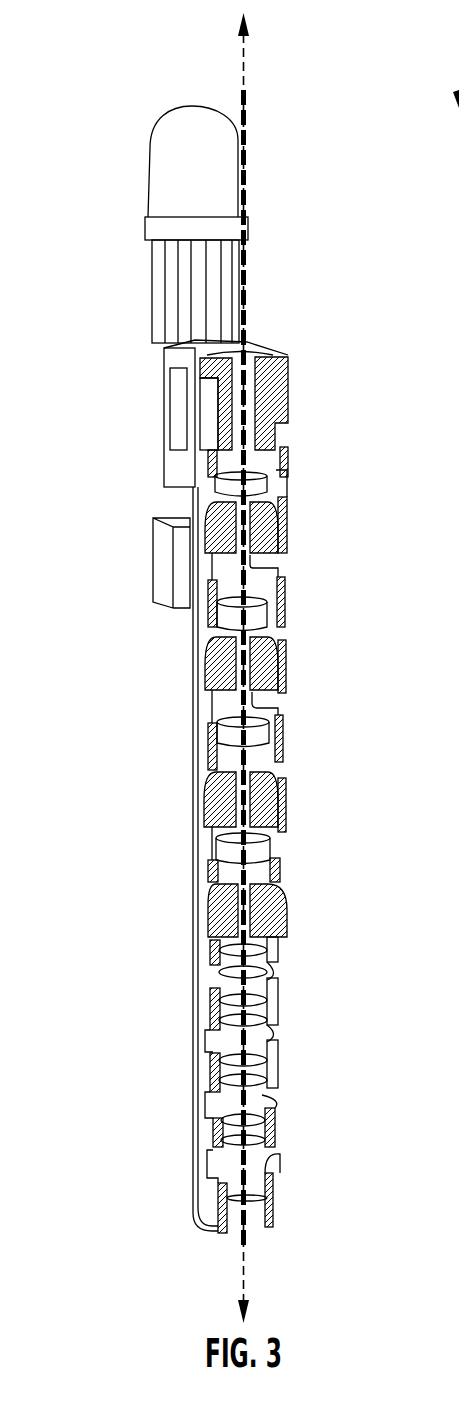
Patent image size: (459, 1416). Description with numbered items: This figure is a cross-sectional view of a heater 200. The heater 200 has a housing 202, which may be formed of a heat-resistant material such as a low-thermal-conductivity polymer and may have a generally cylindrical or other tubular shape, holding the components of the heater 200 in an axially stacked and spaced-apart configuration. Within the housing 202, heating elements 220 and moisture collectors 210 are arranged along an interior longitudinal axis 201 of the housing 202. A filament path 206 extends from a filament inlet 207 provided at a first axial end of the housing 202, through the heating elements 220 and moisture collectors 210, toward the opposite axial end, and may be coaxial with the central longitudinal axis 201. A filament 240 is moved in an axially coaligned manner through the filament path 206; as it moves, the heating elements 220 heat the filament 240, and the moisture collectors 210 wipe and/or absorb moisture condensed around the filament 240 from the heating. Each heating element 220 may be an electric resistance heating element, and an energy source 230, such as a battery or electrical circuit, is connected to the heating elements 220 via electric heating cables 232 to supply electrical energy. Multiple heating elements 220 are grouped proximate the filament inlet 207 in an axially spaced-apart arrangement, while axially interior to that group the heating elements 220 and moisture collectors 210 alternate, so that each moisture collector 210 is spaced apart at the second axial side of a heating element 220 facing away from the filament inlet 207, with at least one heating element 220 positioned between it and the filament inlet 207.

The heater 200 is at (131, 25).
The longitudinal axis 201 is at (246, 57).
The housing 202 is at (281, 397).
The filament path 206 is at (232, 994).
The filament inlet 207 is at (227, 1242).
The moisture collector 210 is at (272, 533).
The heating element 220 is at (260, 733).
The energy source 230 is at (157, 140).
The electric heating cables 232 is at (157, 292).
The filament 240 is at (247, 97).